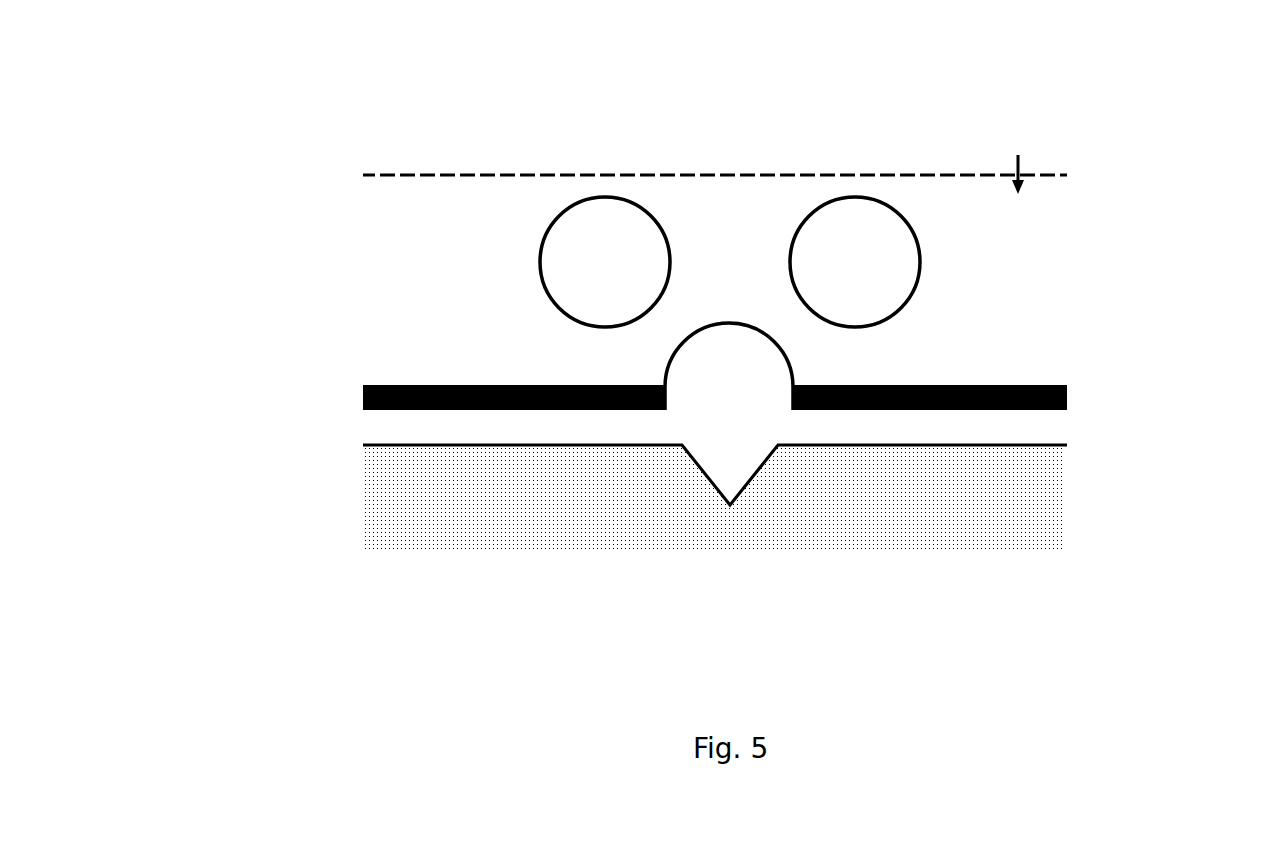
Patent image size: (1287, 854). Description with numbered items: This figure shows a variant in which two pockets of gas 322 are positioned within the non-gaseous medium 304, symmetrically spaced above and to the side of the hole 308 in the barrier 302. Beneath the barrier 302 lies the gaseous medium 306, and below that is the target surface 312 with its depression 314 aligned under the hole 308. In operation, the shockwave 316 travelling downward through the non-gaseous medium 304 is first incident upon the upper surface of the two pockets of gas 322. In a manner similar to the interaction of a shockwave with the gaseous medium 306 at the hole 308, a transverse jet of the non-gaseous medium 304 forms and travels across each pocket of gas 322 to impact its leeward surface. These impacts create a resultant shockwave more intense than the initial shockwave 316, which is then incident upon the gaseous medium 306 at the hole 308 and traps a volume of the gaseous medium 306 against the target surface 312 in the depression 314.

The barrier 302 is at (437, 395).
The non-gaseous medium 304 is at (453, 252).
The gaseous medium 306 is at (500, 428).
The hole 308 is at (723, 393).
The target surface 312 is at (975, 500).
The depression 314 is at (750, 482).
The shockwave 316 is at (952, 173).
The pockets of gas 322 is at (815, 207).